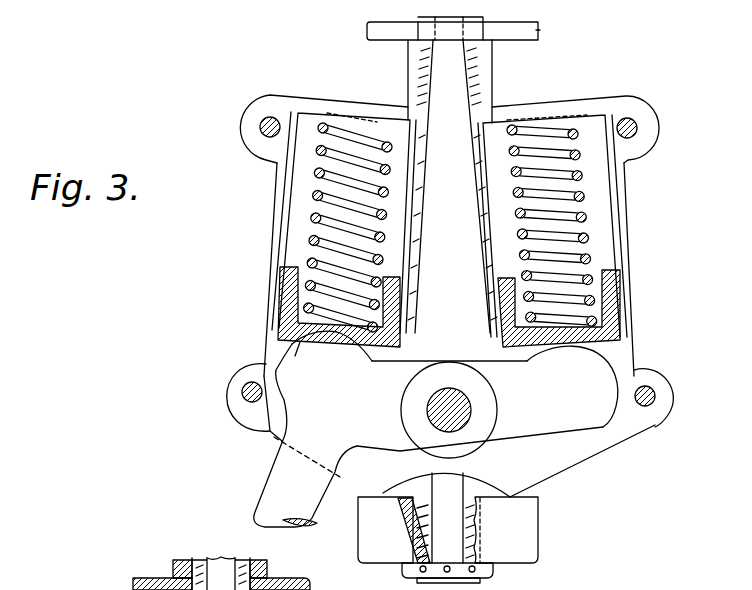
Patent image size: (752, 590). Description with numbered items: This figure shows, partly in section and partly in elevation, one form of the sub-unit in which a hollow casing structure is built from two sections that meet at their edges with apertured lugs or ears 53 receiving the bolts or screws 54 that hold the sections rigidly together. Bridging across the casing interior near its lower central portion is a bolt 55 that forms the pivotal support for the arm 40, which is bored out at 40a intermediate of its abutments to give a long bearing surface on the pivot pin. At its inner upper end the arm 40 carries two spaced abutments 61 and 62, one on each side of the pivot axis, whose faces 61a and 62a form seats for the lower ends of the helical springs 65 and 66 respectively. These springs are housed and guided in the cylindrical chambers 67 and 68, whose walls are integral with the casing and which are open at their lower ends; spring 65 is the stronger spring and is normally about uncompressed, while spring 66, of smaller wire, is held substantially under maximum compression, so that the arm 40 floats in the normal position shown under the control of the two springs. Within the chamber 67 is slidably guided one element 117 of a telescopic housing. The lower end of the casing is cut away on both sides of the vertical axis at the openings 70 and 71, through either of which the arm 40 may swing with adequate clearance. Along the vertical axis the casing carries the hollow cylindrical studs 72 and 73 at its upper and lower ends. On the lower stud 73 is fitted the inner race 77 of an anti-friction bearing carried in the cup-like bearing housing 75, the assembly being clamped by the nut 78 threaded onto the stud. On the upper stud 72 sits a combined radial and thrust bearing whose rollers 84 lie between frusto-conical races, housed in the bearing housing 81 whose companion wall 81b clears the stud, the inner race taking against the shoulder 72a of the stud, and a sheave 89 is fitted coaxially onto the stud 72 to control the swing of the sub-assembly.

The bearing housing 81 is at (364, 27).
The shoulder 72a is at (536, 34).
The helical spring 65 is at (580, 152).
The lugs or ears 53 is at (240, 116).
The bolts or screws 54 is at (261, 128).
The cylindrical chamber 68 is at (295, 196).
The helical spring 66 is at (311, 307).
The cylindrical chamber 67 is at (494, 205).
The telescopic housing element 117 is at (610, 300).
The abutment 62 is at (302, 360).
The abutment face 62a is at (333, 345).
The abutment 61 is at (595, 382).
The abutment face 61a is at (634, 358).
The bolt 55 is at (428, 411).
The bore 40a is at (468, 394).
The arm 40 is at (283, 484).
The opening 70 is at (570, 454).
The opening 71 is at (270, 436).
The cup-like bearing housing 75 is at (546, 548).
The inner race 77 is at (405, 510).
The cylindrical stud 73 is at (473, 545).
The nut 78 is at (490, 574).
The cylindrical stud 72 is at (236, 557).
The sheave 89 is at (175, 560).
The companion wall 81b is at (172, 575).
The rollers 84 is at (205, 582).